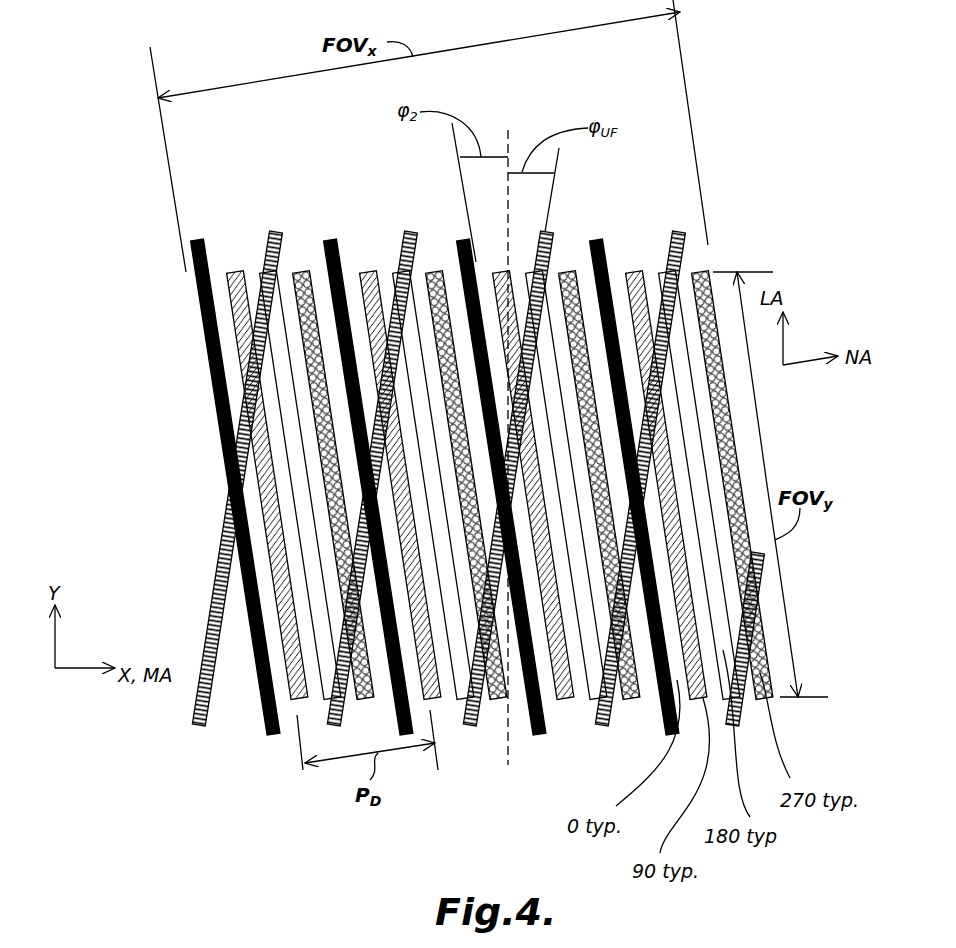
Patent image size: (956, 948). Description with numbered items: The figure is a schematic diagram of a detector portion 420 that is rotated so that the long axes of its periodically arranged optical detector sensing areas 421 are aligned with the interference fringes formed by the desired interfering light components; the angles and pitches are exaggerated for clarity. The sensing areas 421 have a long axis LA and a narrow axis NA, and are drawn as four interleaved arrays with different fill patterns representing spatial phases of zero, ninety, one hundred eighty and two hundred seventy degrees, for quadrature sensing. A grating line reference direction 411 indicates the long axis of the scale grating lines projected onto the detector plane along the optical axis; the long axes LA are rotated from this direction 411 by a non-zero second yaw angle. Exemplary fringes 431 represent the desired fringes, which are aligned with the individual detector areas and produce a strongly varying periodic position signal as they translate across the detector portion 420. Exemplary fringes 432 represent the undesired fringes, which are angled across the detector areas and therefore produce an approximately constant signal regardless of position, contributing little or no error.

The grating line reference direction 411 is at (508, 140).
The detector portion 420 is at (128, 237).
The optical detector sensing areas 421 is at (176, 496).
The exemplary fringes 431 is at (190, 253).
The exemplary fringes 432 is at (262, 243).